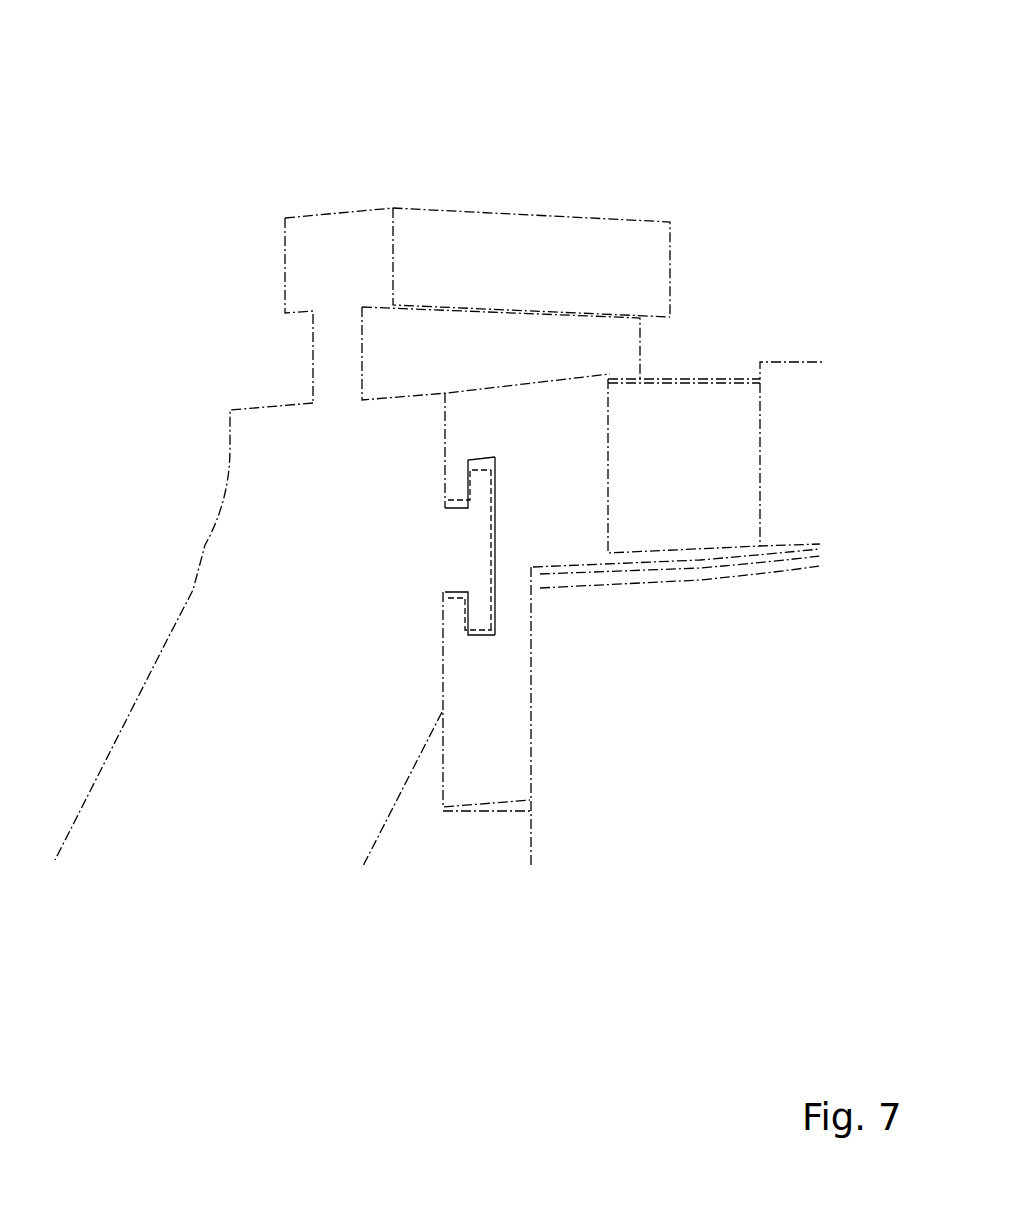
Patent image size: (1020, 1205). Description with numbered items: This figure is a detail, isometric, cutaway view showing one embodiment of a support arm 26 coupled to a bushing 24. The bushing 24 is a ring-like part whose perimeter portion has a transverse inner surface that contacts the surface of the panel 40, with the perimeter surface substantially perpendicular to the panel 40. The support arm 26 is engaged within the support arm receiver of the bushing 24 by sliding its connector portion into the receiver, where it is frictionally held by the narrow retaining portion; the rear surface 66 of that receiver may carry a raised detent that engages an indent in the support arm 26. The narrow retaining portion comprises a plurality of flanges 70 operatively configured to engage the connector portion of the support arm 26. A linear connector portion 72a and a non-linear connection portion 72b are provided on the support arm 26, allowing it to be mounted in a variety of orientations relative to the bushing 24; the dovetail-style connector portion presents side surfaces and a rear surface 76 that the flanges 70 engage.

The bushing 24 is at (689, 383).
The support arm 26 is at (185, 590).
The panel 40 is at (615, 623).
The rear surface 66 is at (493, 608).
The flanges 70 is at (452, 500).
The linear connector portion 72a is at (331, 225).
The non-linear connection portion 72b is at (478, 497).
The rear surface 76 is at (490, 537).